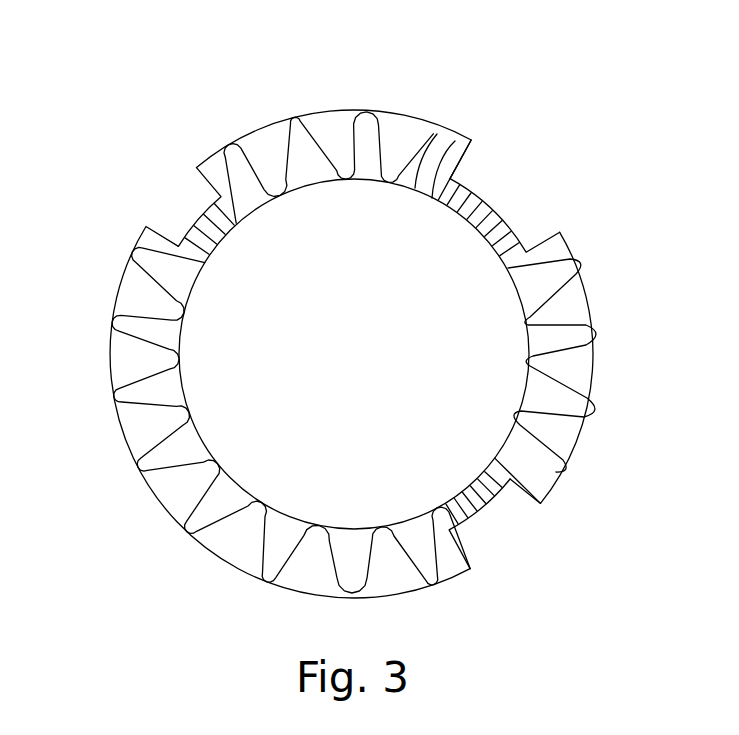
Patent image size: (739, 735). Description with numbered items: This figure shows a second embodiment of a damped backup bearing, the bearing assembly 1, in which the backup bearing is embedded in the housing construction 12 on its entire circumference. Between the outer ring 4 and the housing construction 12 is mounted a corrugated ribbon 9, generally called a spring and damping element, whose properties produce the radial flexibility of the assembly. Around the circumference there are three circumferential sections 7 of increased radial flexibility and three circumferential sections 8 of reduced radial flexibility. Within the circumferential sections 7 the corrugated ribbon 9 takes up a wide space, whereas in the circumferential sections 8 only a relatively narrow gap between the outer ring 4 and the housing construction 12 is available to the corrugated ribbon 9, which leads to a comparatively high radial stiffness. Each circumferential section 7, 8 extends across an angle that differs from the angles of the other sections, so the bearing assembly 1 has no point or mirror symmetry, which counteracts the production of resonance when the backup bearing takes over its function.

The bearing assembly 1 is at (193, 92).
The outer ring 4 is at (426, 161).
The circumferential sections of increased radial flexibility 7 is at (338, 125).
The circumferential sections of reduced radial flexibility 8 is at (470, 200).
The corrugated ribbon 9 is at (177, 484).
The housing construction 12 is at (445, 134).